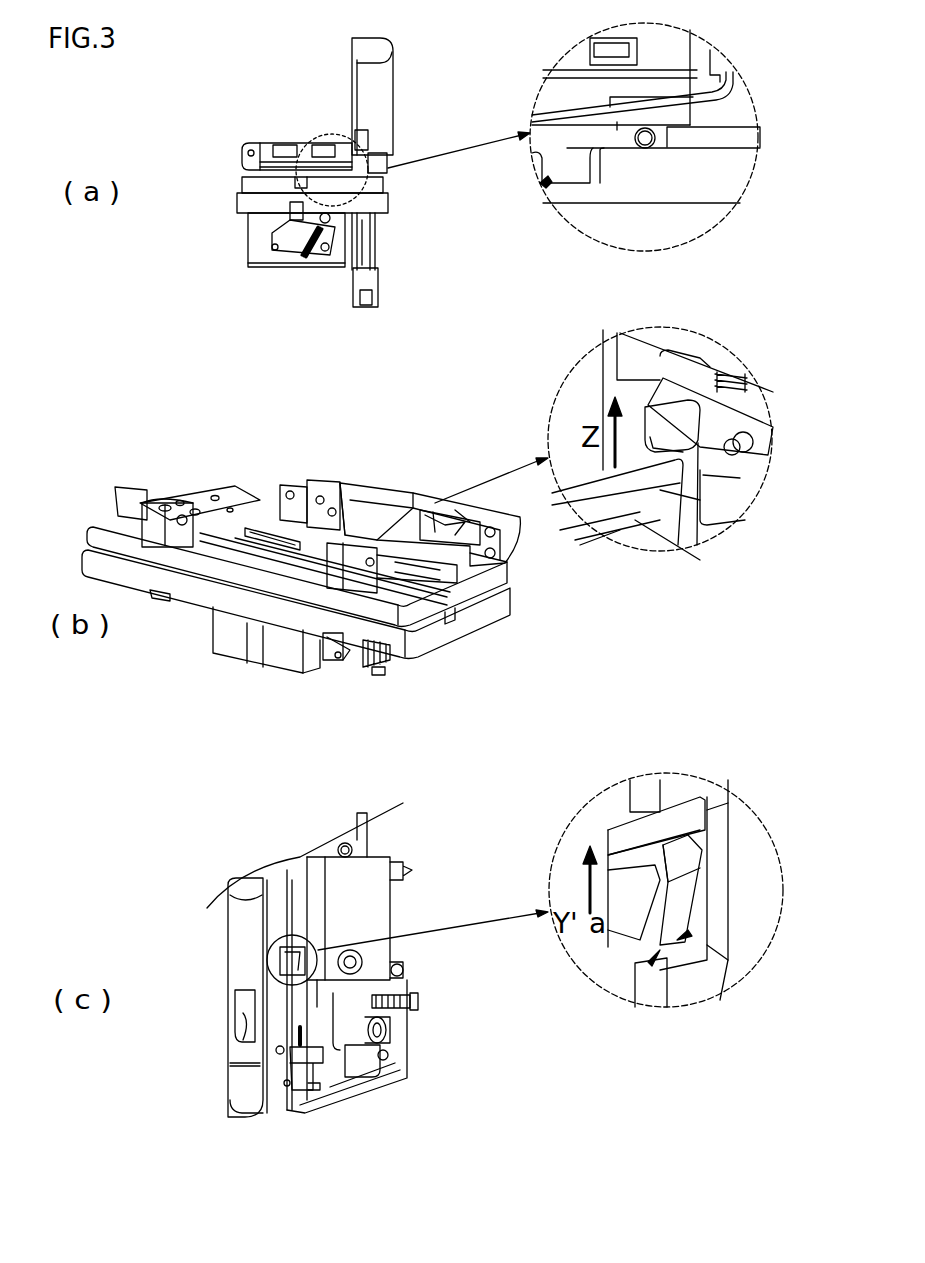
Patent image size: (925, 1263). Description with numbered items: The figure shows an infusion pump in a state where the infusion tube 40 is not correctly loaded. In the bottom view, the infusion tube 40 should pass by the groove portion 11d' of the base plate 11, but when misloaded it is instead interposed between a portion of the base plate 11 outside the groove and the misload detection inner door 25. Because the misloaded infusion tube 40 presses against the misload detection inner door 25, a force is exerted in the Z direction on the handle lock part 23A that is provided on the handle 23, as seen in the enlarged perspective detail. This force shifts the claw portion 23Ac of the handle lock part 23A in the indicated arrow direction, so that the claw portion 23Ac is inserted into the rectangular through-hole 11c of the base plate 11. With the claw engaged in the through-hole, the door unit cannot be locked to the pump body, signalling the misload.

The base plate 11 is at (628, 172).
The rectangular through-hole 11c is at (653, 963).
The groove portion 11d' is at (480, 240).
The handle 23 is at (385, 120).
The handle lock part 23A is at (688, 397).
The claw portion 23Ac is at (677, 940).
The misload detection inner door 25 is at (658, 117).
The infusion tube 40 is at (643, 132).